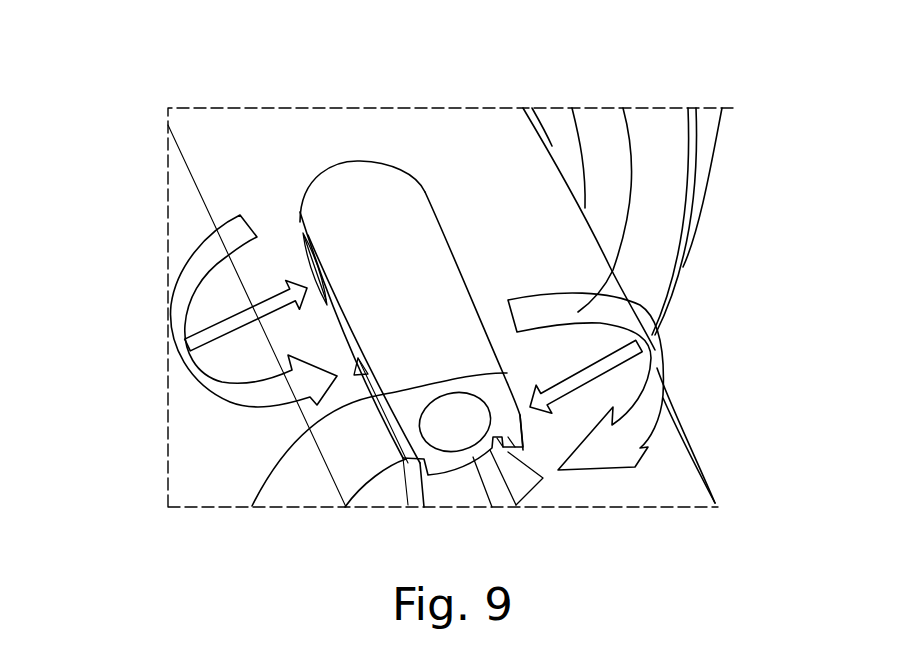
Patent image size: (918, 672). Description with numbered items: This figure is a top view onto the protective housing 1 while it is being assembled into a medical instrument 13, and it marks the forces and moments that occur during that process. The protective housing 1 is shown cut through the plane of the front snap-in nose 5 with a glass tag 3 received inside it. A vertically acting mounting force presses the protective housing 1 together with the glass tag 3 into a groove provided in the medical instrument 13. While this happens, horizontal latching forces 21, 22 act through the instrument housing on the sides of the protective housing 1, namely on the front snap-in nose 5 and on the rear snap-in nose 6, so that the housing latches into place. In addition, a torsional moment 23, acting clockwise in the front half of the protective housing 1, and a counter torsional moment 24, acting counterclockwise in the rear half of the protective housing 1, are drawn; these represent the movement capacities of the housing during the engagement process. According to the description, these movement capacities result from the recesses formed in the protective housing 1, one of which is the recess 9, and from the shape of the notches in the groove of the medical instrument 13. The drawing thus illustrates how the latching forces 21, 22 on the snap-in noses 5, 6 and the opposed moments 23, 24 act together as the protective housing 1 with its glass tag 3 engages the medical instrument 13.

The protective housing 1 is at (383, 210).
The glass tag 3 is at (437, 427).
The front snap-in nose 5 is at (520, 417).
The rear snap-in nose 6 is at (300, 260).
The recess 9 is at (368, 387).
The medical instrument 13 is at (215, 140).
The horizontal latching force 21 is at (626, 352).
The horizontal latching force 22 is at (220, 330).
The torsional moment 23 is at (578, 310).
The counter torsional moment 24 is at (205, 260).